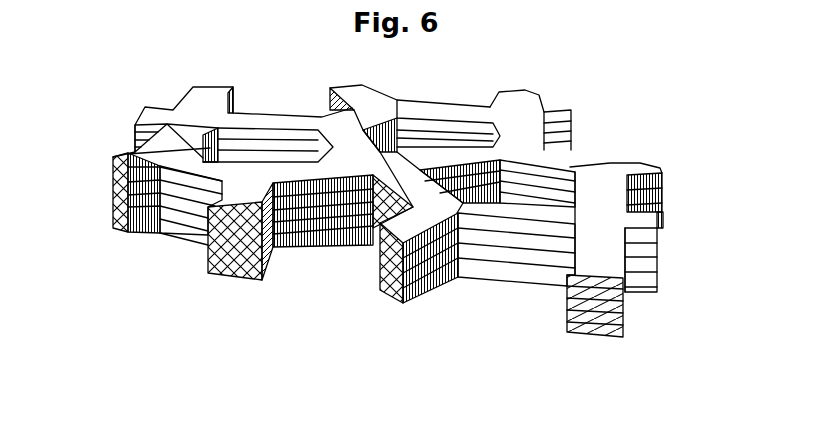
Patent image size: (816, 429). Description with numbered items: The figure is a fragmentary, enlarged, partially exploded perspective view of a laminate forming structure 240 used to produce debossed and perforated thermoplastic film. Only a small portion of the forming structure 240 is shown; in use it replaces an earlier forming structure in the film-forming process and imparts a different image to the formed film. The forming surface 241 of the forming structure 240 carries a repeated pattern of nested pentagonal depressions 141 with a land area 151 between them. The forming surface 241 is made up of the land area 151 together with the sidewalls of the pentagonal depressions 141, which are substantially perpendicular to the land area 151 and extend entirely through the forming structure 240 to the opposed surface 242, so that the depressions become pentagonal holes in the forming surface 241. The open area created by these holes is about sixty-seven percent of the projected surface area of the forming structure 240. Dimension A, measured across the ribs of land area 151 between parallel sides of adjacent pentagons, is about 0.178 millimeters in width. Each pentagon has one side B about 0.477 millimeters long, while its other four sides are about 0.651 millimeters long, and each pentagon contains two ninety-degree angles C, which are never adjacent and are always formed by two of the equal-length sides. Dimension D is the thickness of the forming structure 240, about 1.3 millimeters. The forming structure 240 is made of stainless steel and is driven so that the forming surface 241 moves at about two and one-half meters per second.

The forming structure 240 is at (372, 195).
The nested pentagonal depressions 141 is at (295, 140).
The land area 151 is at (522, 109).
The forming surface 241 is at (605, 252).
The opposed surface 242 is at (542, 288).
The dimension across ribs of land area A is at (177, 73).
The short side of pentagon B is at (389, 107).
The ninety-degree angles of pentagon C is at (405, 143).
The thickness of forming structure D is at (80, 155).